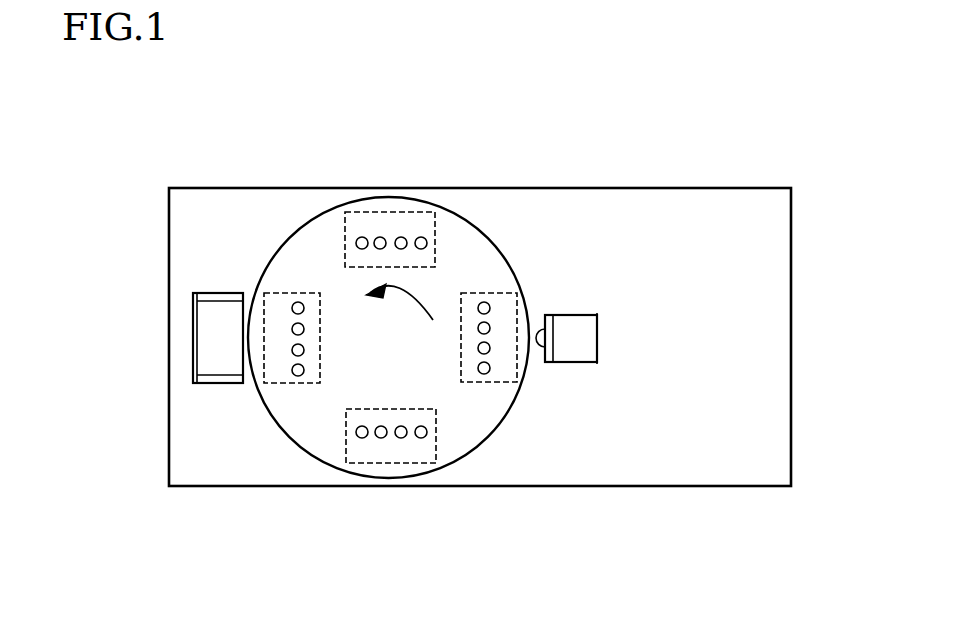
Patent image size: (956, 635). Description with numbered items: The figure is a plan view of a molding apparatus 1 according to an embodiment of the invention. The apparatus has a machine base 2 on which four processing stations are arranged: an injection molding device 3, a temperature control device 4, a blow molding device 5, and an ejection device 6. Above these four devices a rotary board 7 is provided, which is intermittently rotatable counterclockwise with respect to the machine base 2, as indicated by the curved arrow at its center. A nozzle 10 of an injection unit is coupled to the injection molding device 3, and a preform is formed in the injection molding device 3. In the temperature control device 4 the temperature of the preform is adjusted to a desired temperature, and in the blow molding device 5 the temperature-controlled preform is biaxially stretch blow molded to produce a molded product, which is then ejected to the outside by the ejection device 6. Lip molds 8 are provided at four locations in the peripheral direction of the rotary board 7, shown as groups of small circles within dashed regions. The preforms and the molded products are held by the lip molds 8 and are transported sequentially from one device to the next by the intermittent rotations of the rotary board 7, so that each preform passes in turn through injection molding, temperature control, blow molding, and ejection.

The molding apparatus 1 is at (622, 167).
The machine base 2 is at (550, 457).
The injection molding device 3 is at (415, 311).
The temperature control device 4 is at (408, 209).
The blow molding device 5 is at (252, 283).
The ejection device 6 is at (413, 464).
The rotary board 7 is at (478, 227).
The lip molds 8 is at (377, 238).
The nozzle 10 is at (567, 361).